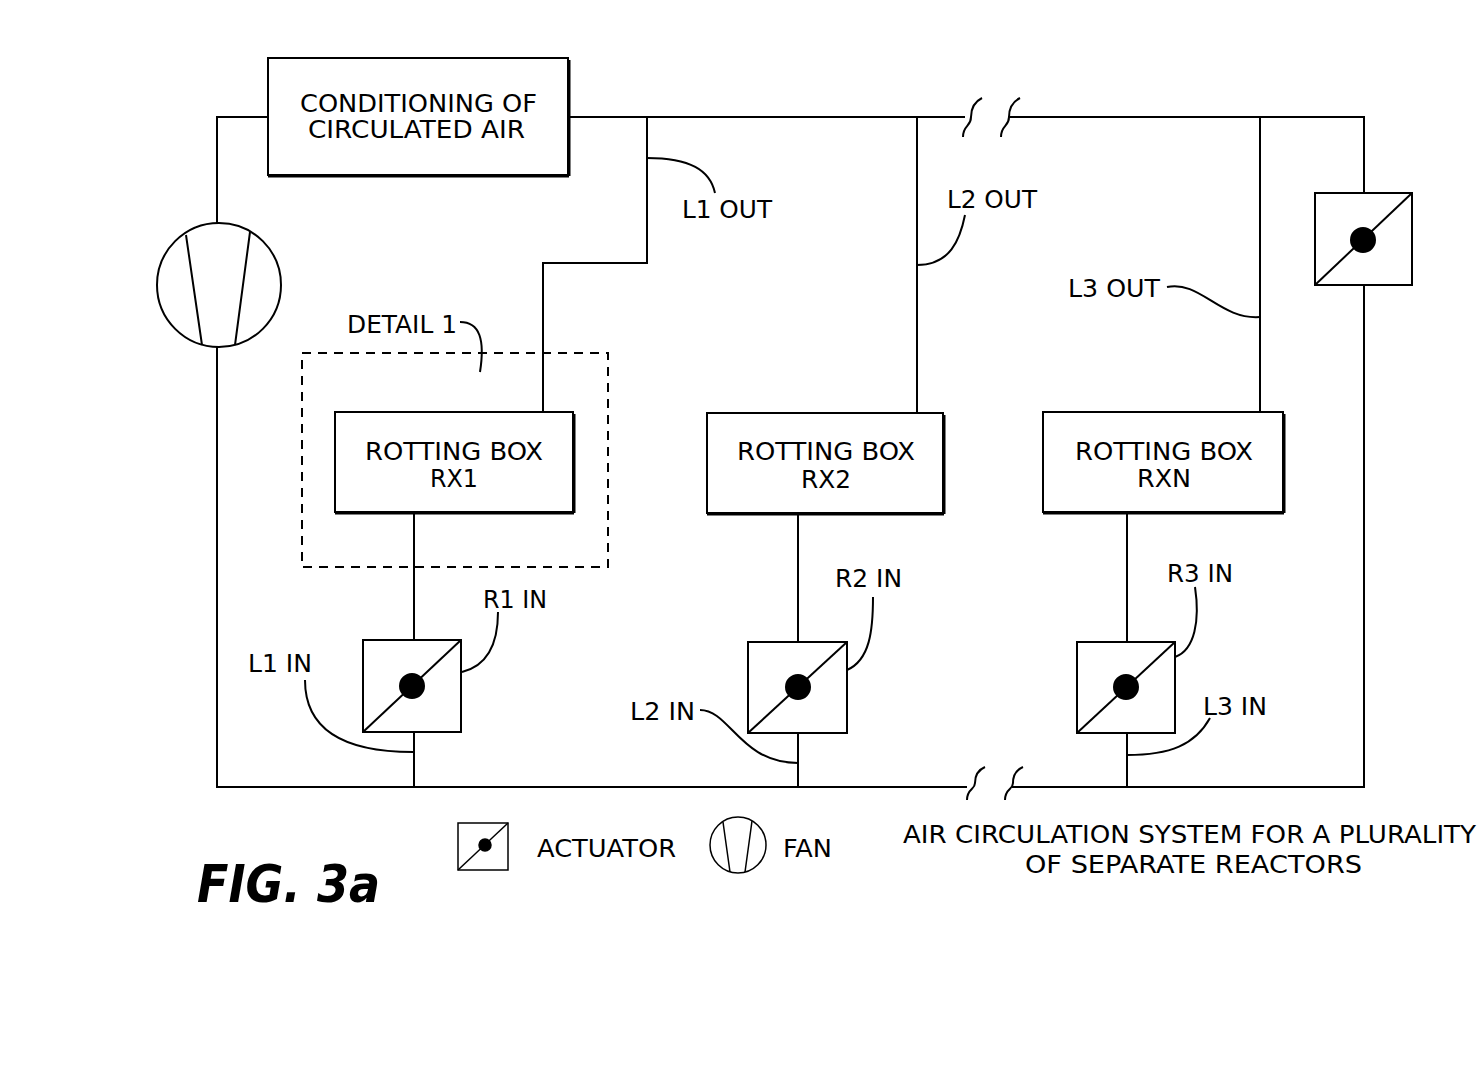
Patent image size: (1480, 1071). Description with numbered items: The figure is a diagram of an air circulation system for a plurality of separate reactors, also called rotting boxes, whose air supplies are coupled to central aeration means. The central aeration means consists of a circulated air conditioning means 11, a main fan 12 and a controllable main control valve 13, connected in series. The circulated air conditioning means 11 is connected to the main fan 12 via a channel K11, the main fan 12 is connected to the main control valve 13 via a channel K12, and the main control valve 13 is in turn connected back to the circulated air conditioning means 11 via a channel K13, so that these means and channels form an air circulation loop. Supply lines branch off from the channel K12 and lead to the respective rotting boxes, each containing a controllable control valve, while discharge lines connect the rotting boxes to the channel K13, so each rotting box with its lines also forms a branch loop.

The circulated air conditioning means 11 is at (407, 176).
The main fan 12 is at (272, 253).
The main control valve 13 is at (1378, 288).
The channel K11 is at (217, 140).
The channel K12 is at (213, 713).
The channel K13 is at (1366, 157).